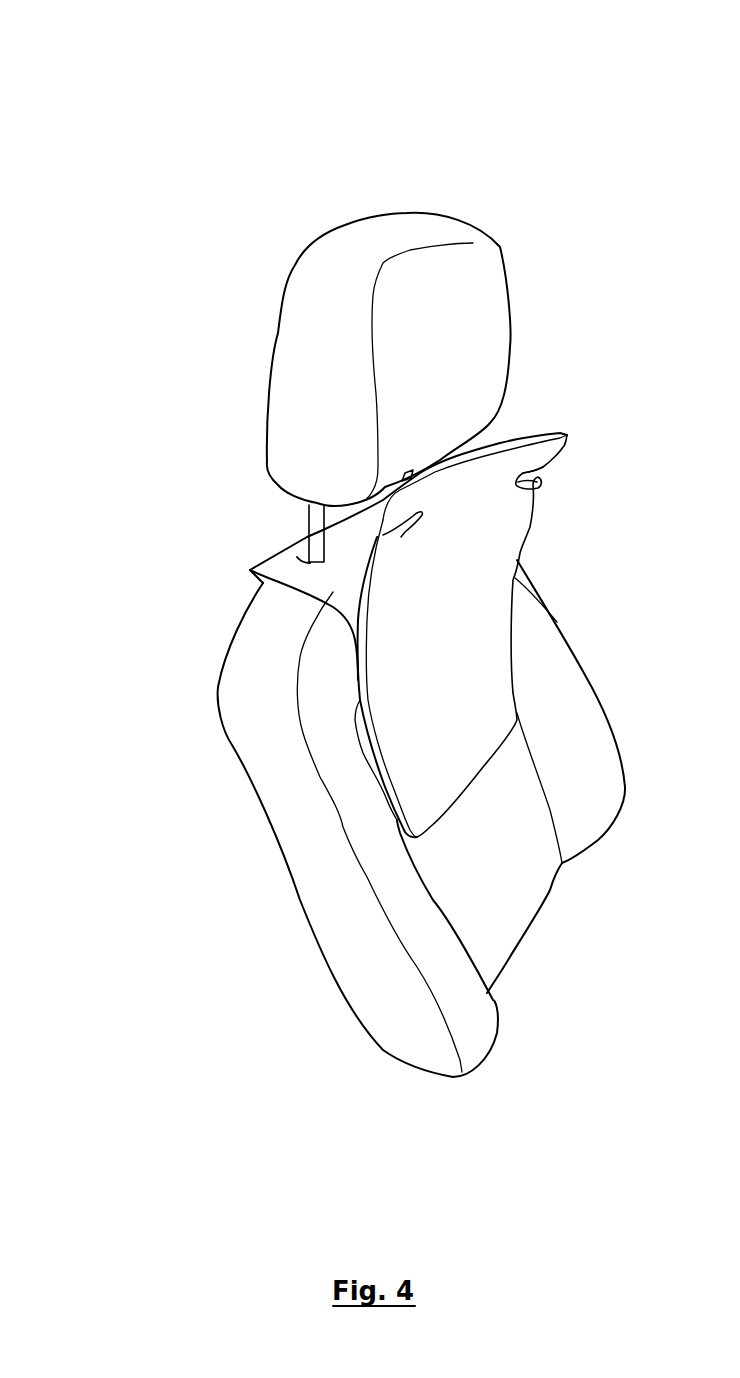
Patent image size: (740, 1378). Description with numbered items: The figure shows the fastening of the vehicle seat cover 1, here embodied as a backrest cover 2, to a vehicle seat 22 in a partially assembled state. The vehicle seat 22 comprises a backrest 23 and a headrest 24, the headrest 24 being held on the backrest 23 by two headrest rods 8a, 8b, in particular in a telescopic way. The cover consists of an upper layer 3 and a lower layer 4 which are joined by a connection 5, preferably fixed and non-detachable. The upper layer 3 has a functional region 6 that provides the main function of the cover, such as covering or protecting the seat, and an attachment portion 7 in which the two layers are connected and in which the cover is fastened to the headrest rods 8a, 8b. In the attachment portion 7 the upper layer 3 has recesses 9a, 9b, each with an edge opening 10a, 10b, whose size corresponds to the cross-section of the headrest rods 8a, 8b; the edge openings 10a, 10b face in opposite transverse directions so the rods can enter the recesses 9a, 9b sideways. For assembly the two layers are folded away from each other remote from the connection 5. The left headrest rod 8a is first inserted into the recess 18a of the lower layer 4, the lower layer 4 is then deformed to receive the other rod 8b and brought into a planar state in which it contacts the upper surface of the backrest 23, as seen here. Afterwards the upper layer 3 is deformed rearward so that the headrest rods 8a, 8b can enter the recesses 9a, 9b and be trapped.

The vehicle seat cover 1 is at (411, 91).
The backrest cover 2 is at (360, 634).
The upper layer 3 is at (500, 561).
The lower layer 4 is at (240, 573).
The connection 5 is at (343, 631).
The functional region 6 is at (437, 718).
The attachment portion 7 is at (583, 433).
The headrest rod 8a is at (303, 515).
The headrest rod 8b is at (408, 472).
The recess 9a is at (420, 513).
The recess 9b is at (520, 475).
The edge opening 10a is at (405, 535).
The edge opening 10b is at (548, 465).
The recess 18a is at (345, 540).
The vehicle seat 22 is at (173, 800).
The backrest 23 is at (327, 900).
The headrest 24 is at (470, 283).